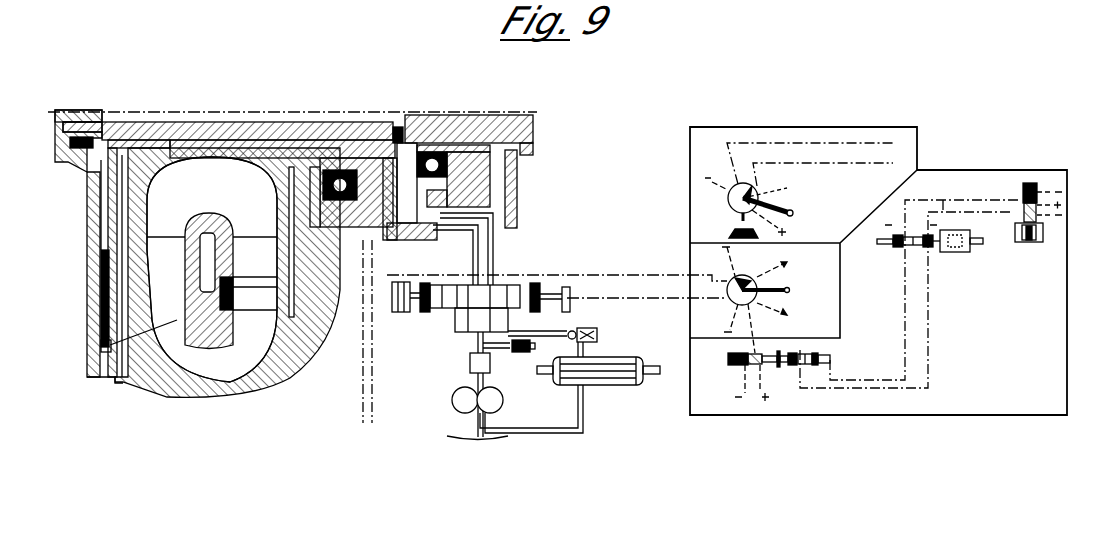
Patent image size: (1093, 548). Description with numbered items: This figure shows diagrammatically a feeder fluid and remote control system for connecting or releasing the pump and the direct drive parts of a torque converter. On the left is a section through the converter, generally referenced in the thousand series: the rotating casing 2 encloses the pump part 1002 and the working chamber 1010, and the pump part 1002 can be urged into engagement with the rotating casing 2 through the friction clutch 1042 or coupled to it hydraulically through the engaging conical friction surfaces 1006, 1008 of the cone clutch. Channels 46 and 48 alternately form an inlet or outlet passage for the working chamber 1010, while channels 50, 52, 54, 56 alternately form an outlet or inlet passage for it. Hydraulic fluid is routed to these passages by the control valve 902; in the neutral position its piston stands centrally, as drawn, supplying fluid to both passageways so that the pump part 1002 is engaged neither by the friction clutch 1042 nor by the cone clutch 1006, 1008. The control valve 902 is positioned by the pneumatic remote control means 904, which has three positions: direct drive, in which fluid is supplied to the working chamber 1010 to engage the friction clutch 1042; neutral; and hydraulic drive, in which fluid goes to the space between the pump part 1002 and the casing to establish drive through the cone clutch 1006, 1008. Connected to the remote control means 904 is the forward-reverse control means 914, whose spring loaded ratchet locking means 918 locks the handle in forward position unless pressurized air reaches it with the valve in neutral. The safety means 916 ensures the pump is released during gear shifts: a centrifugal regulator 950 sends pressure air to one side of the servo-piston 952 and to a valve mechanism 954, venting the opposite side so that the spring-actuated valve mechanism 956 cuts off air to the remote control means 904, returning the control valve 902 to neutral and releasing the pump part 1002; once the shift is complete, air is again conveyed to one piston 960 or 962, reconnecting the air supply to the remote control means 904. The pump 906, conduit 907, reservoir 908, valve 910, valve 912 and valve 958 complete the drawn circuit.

The rotating casing 2 is at (183, 390).
The channel 46 is at (350, 147).
The channel 48 is at (248, 170).
The channel 50 is at (397, 236).
The channel 52 is at (405, 143).
The channel 54 is at (200, 122).
The channel 56 is at (100, 123).
The control valve 902 is at (519, 270).
The remote control means 904 is at (698, 262).
The pump 906 is at (443, 400).
The conduit 907 is at (550, 330).
The reservoir 908 is at (615, 365).
The check valve 910 is at (588, 328).
The relief valve 912 is at (533, 352).
The forward-reverse control means 914 is at (700, 163).
The safety means 916 is at (688, 405).
The locking means 918 is at (730, 225).
The centrifugal regulator 950 is at (1047, 240).
The servo-piston 952 is at (960, 252).
The valve mechanism 954 is at (897, 248).
The valve mechanism 956 is at (783, 373).
The pilot valve 958 is at (737, 367).
The piston 960 is at (800, 348).
The piston 962 is at (833, 360).
The pump part 1002 is at (177, 317).
The conical friction surface 1006 is at (105, 340).
The conical friction surface 1008 is at (138, 372).
The working chamber 1010 is at (193, 205).
The friction clutch 1042 is at (100, 305).